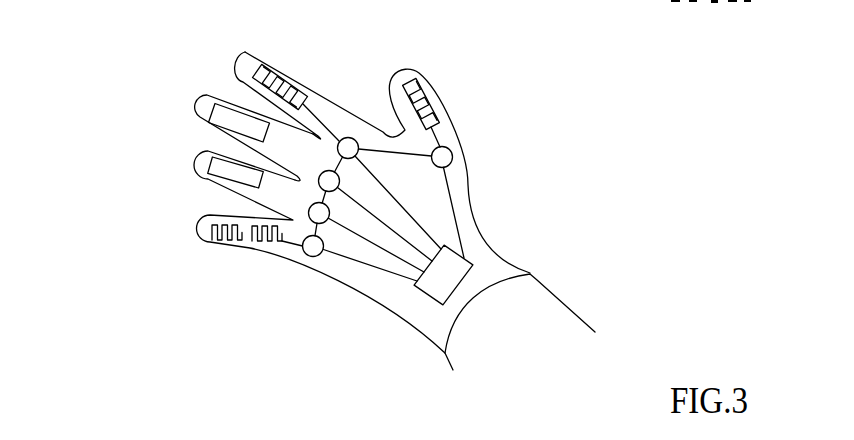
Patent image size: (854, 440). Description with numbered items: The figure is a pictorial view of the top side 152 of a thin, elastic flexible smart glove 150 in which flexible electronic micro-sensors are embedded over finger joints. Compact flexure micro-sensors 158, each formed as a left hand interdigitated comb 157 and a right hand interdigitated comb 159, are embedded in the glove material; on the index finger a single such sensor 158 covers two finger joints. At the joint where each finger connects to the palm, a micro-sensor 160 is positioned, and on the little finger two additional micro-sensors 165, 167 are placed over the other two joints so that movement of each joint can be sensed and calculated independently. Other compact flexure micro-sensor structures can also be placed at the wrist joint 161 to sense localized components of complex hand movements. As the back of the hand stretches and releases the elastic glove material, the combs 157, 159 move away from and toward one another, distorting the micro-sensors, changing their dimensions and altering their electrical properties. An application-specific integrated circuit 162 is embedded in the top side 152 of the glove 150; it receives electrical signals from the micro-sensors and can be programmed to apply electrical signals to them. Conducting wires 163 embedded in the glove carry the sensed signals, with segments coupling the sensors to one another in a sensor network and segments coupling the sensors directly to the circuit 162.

The flexible smart glove 150 is at (144, 39).
The top side 152 is at (434, 192).
The left hand interdigitated comb 157 is at (257, 90).
The compact flexure micro-sensor 158 is at (297, 66).
The right hand interdigitated comb 159 is at (272, 64).
The micro-sensor 160 is at (350, 146).
The wrist joint 161 is at (430, 298).
The application-specific integrated circuit (ASIC) 162 is at (454, 272).
The conducting wires 163 is at (347, 137).
The micro-sensor 165 is at (268, 245).
The micro-sensor 167 is at (432, 99).